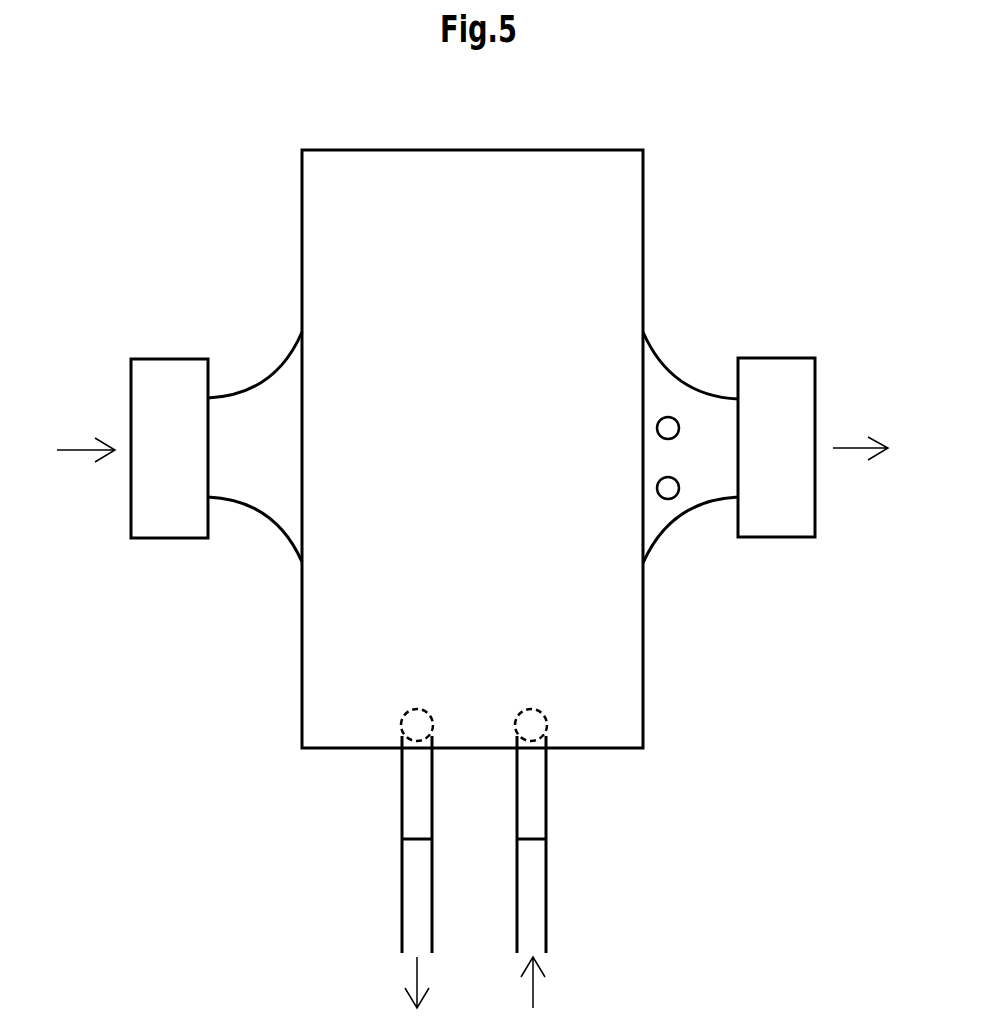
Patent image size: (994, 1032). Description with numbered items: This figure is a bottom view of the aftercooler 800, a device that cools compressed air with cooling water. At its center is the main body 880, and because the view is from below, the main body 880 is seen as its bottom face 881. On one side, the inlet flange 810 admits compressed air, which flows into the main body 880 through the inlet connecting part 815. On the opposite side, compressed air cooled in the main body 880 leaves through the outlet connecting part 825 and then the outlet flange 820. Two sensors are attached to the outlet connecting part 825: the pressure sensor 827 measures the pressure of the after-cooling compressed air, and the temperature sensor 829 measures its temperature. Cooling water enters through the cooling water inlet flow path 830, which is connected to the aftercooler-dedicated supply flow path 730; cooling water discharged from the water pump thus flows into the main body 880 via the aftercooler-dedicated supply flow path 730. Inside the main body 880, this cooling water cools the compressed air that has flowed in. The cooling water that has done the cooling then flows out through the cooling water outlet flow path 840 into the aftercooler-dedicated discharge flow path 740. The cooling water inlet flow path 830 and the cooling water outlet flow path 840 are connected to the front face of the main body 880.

The aftercooler 800 is at (761, 190).
The inlet flange 810 is at (173, 395).
The inlet connecting part 815 is at (262, 413).
The outlet flange 820 is at (787, 420).
The outlet connecting part 825 is at (708, 408).
The pressure sensor 827 is at (667, 499).
The temperature sensor 829 is at (678, 437).
The cooling water inlet flow path 830 is at (528, 794).
The cooling water outlet flow path 840 is at (418, 790).
The aftercooler-dedicated supply flow path 730 is at (530, 895).
The aftercooler-dedicated discharge flow path 740 is at (418, 897).
The main body 880 is at (536, 150).
The bottom face 881 is at (428, 325).